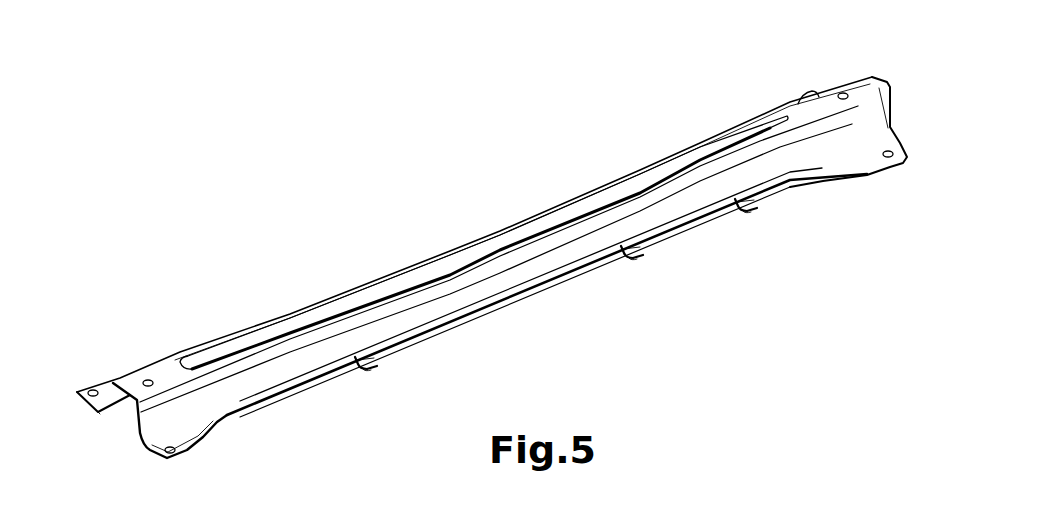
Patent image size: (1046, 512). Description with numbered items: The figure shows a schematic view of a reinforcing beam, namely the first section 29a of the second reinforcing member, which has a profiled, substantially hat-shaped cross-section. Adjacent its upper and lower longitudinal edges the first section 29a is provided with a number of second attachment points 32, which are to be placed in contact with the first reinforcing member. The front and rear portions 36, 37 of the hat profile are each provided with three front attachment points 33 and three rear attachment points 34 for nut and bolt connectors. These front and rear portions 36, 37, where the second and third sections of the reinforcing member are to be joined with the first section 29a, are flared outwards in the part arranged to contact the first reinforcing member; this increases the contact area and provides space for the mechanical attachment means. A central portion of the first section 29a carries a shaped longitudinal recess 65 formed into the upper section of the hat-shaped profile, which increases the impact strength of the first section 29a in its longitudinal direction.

The first section 29a is at (413, 267).
The shaped longitudinal recess 65 is at (552, 228).
The second attachment points 32 is at (378, 366).
The front attachment points 33 is at (170, 447).
The rear attachment points 34 is at (887, 151).
The front portion 36 is at (213, 455).
The rear portion 37 is at (877, 177).